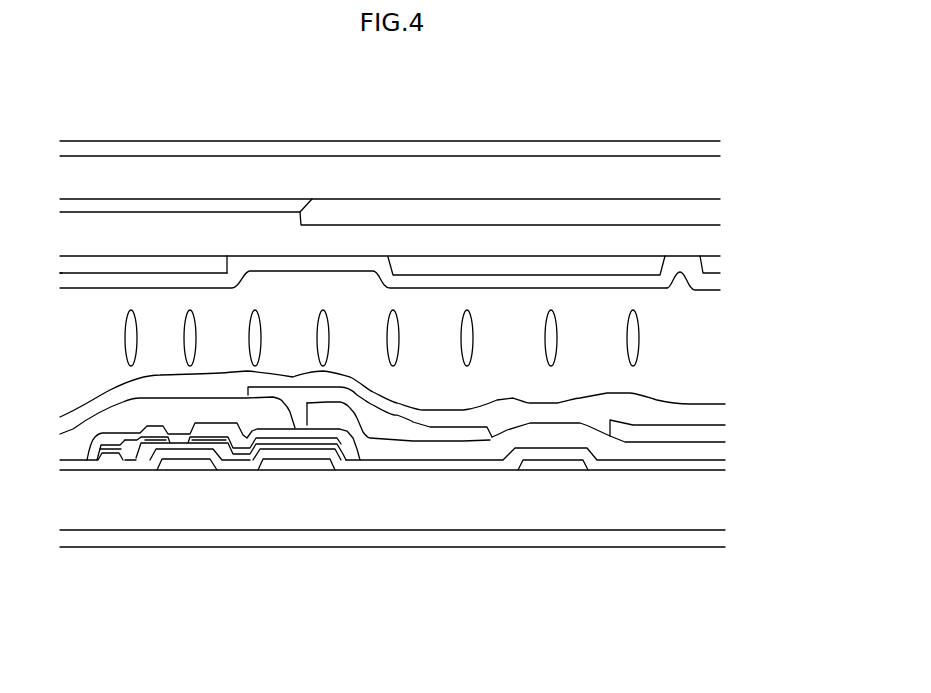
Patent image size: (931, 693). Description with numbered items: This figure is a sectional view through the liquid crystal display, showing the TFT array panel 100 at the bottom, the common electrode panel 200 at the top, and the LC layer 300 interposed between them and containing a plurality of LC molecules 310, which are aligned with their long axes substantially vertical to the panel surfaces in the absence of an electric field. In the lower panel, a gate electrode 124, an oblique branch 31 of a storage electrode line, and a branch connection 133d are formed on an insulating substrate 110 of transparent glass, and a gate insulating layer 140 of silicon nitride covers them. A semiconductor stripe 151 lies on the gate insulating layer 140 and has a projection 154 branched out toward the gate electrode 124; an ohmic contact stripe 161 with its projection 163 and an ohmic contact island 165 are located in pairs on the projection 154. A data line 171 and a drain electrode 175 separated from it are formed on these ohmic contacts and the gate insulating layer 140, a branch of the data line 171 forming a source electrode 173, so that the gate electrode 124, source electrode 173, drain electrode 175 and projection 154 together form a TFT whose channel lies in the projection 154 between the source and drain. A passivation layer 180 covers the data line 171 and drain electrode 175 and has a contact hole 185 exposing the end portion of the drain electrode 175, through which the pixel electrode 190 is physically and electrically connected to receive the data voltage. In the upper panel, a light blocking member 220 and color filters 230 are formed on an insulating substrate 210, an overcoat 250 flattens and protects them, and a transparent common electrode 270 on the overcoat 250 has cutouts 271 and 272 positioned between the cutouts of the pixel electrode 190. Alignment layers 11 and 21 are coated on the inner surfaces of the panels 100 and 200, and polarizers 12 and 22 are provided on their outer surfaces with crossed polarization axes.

The common electrode panel 200 is at (443, 199).
The polarizer 22 is at (122, 150).
The insulating substrate 210 is at (557, 177).
The light blocking member 220 is at (198, 206).
The color filter 230 is at (403, 212).
The overcoat 250 is at (478, 243).
The common electrode 270 is at (720, 267).
The lower cutout of common electrode 271 is at (693, 268).
The lower cutout of common electrode 272 is at (227, 264).
The alignment layer 21 is at (77, 282).
The LC layer 300 is at (458, 338).
The LC molecules 310 is at (637, 349).
The TFT array panel 100 is at (431, 504).
The alignment layer 11 is at (110, 385).
The pixel electrode 190 is at (678, 432).
The passivation layer 180 is at (710, 452).
The contact hole 185 is at (296, 428).
The data line 171 is at (90, 452).
The ohmic contact stripe 161 is at (118, 451).
The semiconductor stripe 151 is at (107, 457).
The source electrode 173 is at (150, 432).
The drain electrode 175 is at (245, 449).
The projection of semiconductor stripe 154 is at (205, 443).
The projection of ohmic contact stripe 163 is at (152, 446).
The ohmic contact island 165 is at (223, 443).
The gate electrode 124 is at (180, 464).
The branch connection 133d is at (285, 464).
The oblique branch 31 is at (548, 469).
The gate insulating layer 140 is at (618, 463).
The insulating substrate 110 is at (705, 497).
The polarizer 12 is at (423, 538).